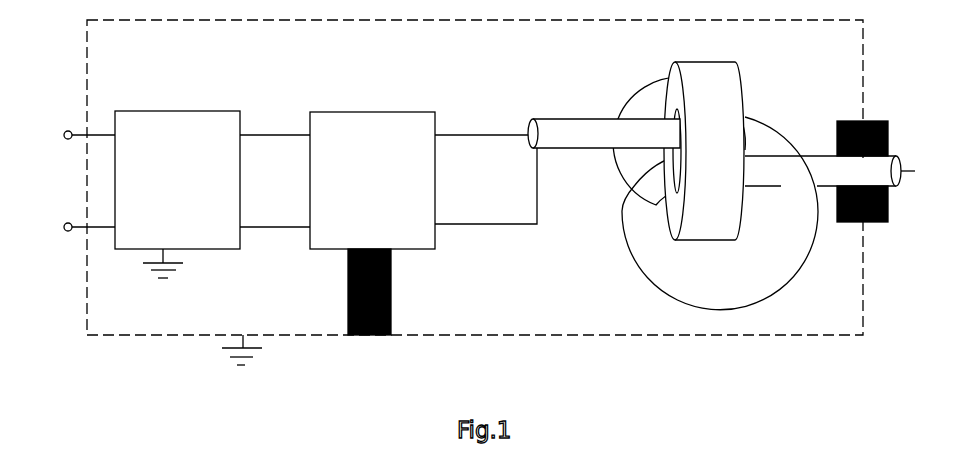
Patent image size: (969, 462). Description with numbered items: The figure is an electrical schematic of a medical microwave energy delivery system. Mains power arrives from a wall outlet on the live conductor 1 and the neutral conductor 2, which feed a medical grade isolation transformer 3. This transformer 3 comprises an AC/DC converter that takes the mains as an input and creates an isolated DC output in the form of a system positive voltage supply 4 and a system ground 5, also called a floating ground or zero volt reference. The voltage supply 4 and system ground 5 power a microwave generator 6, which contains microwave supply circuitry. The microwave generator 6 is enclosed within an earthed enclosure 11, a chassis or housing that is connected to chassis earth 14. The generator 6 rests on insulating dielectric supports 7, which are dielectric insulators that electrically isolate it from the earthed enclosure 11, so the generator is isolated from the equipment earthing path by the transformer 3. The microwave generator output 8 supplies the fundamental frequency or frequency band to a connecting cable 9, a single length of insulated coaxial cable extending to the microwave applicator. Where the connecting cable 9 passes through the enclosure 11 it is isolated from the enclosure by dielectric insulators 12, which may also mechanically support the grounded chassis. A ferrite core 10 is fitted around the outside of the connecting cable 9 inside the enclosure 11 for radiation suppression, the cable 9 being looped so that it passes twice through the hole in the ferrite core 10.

The mains supply live 1 is at (64, 134).
The mains supply neutral 2 is at (64, 226).
The medical grade isolation transformer 3 is at (157, 111).
The system positive voltage supply 4 is at (267, 136).
The system ground 5 is at (264, 228).
The microwave generator 6 is at (360, 112).
The insulating dielectric supports 7 is at (393, 284).
The microwave generator output 8 is at (486, 131).
The connecting cable 9 is at (619, 119).
The ferrite core 10 is at (744, 82).
The earthed enclosure 11 is at (98, 335).
The dielectric insulators 12 is at (888, 132).
The chassis earth 14 is at (261, 349).